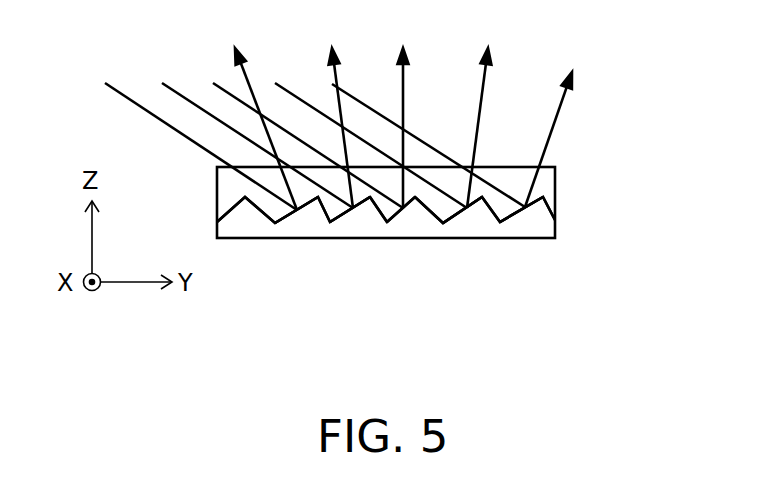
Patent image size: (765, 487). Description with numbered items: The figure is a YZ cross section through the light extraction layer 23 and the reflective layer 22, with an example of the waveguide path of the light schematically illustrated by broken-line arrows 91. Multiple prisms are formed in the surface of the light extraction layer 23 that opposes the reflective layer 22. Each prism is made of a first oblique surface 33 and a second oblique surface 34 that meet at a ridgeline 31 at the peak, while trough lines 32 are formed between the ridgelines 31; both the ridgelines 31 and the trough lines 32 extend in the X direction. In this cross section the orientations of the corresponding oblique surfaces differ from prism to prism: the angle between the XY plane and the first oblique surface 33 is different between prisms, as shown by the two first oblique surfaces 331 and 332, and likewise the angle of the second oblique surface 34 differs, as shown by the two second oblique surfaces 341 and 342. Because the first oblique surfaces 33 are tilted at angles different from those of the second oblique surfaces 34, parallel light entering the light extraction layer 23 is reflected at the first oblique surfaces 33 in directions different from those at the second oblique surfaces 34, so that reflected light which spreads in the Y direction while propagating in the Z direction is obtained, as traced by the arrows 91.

The broken-line arrows 91 is at (558, 117).
The light extraction layer 23 is at (547, 185).
The reflective layer 22 is at (547, 228).
The ridgeline 31 is at (388, 217).
The trough line 32 is at (412, 208).
The first oblique surface 33 is at (333, 342).
The first oblique surface 331 is at (305, 208).
The first oblique surface 332 is at (365, 204).
The second oblique surface 34 is at (573, 342).
The second oblique surface 341 is at (456, 214).
The second oblique surface 342 is at (515, 215).